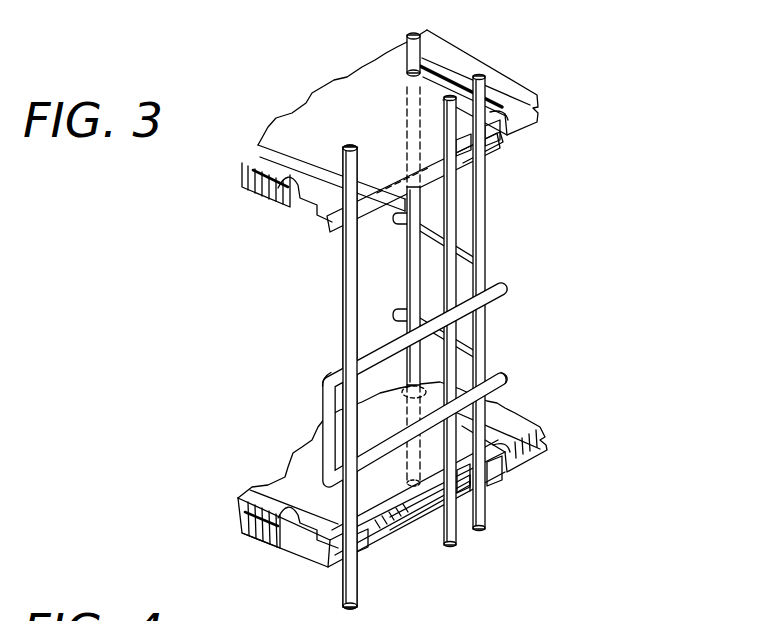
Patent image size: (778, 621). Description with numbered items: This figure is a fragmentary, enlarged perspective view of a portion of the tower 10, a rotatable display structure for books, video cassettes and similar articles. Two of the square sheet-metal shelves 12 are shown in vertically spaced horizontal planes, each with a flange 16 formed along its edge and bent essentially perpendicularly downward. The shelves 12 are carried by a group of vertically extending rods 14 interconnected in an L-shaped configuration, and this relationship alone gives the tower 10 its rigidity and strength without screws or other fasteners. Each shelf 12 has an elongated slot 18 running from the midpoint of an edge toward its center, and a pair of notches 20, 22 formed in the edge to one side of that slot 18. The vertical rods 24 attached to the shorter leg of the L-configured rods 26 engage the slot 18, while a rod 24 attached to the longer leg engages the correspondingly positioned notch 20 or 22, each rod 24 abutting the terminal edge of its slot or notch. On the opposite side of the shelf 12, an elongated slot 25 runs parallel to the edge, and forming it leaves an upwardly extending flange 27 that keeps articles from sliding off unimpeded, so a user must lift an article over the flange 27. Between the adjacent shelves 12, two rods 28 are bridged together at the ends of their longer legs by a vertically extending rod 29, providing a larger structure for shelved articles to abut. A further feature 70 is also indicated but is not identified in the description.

The tower 10 is at (552, 67).
The shelf 12 is at (443, 57).
The group of vertically extending rods 14 is at (516, 284).
The flange 16 is at (468, 212).
The elongated slot 18 is at (505, 151).
The notch 20 is at (462, 170).
The notch 22 is at (388, 600).
The rod 24 is at (408, 43).
The elongated slot 25 is at (283, 197).
The rod 26 is at (500, 145).
The flange 27 is at (253, 183).
The rod 28 is at (527, 381).
The vertically extending rod 29 is at (322, 410).
The direction arrow 70 is at (285, 246).